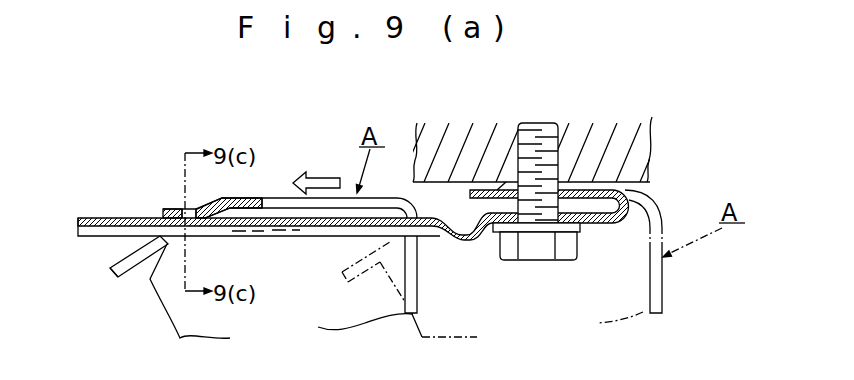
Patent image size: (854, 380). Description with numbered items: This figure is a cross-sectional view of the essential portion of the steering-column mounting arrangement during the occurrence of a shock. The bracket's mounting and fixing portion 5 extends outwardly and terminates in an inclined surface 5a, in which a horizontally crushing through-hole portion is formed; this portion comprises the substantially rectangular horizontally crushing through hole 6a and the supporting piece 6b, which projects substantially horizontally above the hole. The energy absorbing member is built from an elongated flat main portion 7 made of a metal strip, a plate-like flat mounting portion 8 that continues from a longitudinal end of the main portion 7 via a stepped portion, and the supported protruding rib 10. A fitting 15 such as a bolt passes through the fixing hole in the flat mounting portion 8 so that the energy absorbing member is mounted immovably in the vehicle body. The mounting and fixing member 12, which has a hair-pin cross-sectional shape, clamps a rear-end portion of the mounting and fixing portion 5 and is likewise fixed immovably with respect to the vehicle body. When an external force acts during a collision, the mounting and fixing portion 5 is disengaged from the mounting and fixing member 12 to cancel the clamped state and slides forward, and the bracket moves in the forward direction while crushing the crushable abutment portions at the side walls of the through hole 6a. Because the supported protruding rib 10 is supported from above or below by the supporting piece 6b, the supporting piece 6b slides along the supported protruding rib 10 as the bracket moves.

The mounting and fixing portion 5 is at (253, 194).
The inclined surface 5a is at (112, 265).
The horizontally crushing through hole 6a is at (150, 279).
The supporting piece 6b is at (170, 208).
The main portion 7 is at (291, 233).
The flat mounting portion 8 is at (590, 232).
The supported protruding rib 10 is at (115, 217).
The mounting and fixing member 12 is at (634, 196).
The fitting 15 is at (534, 252).